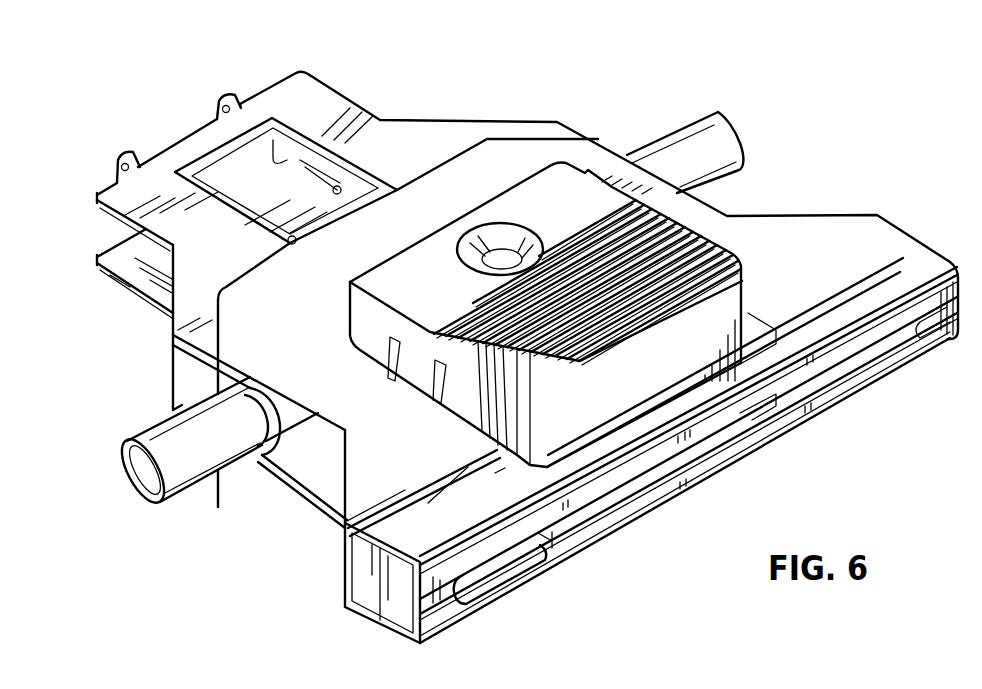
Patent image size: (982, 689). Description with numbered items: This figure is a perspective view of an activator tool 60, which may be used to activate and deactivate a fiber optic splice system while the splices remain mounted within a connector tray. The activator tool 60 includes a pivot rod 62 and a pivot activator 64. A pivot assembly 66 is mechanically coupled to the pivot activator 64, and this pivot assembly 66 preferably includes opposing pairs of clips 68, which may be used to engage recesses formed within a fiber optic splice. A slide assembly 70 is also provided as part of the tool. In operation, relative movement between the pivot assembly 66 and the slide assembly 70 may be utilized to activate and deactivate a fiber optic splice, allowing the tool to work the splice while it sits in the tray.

The activator tool 60 is at (715, 55).
The pivot rod 62 is at (124, 431).
The pivot activator 64 is at (336, 277).
The pivot assembly 66 is at (95, 194).
The clips 68 is at (235, 93).
The slide assembly 70 is at (332, 600).